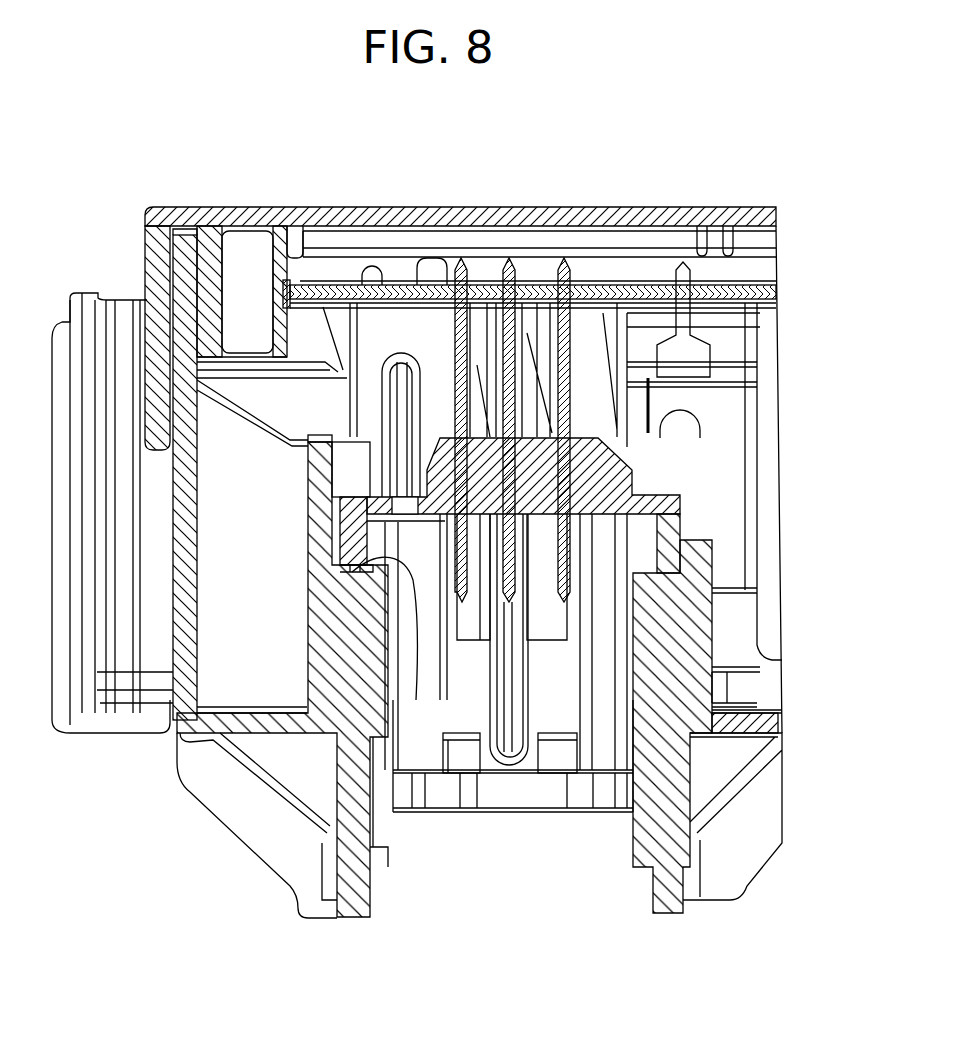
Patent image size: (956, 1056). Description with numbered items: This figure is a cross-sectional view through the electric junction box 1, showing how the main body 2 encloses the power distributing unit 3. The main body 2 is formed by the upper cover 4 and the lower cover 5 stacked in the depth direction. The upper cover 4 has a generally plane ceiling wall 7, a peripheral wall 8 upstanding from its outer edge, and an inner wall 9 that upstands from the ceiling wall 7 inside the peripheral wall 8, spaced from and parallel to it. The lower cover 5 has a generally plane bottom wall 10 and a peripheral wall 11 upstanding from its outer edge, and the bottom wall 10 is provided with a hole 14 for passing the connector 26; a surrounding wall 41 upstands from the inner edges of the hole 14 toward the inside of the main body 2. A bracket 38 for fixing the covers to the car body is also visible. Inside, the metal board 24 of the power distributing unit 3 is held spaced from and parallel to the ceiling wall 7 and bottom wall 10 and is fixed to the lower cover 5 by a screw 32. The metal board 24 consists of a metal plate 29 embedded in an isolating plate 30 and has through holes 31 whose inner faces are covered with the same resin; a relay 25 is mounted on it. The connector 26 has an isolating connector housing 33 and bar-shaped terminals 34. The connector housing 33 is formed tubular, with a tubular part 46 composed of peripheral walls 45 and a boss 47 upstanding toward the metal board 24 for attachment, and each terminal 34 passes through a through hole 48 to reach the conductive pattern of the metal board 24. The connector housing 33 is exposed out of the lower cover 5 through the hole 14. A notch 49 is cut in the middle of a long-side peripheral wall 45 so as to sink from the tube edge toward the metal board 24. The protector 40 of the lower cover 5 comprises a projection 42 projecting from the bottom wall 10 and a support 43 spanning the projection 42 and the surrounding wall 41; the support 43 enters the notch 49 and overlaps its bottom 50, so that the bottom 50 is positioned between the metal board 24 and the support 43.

The electric junction box 1 is at (315, 170).
The main body 2 is at (275, 197).
The power distributing unit 3 is at (373, 265).
The upper cover 4 is at (454, 205).
The lower cover 5 is at (792, 853).
The ceiling wall 7 is at (550, 216).
The peripheral wall 8 is at (148, 352).
The inner wall 9 is at (217, 284).
The bottom wall 10 is at (752, 722).
The peripheral wall 11 is at (140, 720).
The hole 14 is at (416, 700).
The metal board 24 is at (394, 265).
The relay 25 is at (763, 563).
The connector 26 is at (695, 523).
The metal plate 29 is at (705, 283).
The isolating plate 30 is at (775, 290).
The through hole 31 is at (468, 264).
The screw 32 is at (418, 262).
The connector housing 33 is at (683, 503).
The terminal 34 is at (460, 396).
The bracket 38 is at (93, 710).
The protector 40 is at (260, 876).
The surrounding wall 41 is at (320, 540).
The projection 42 is at (267, 830).
The support 43 is at (352, 575).
The peripheral wall 45 is at (333, 526).
The tubular part 46 is at (333, 509).
The boss 47 is at (372, 386).
The through hole 48 is at (473, 605).
The notch 49 is at (348, 585).
The bottom 50 is at (325, 585).